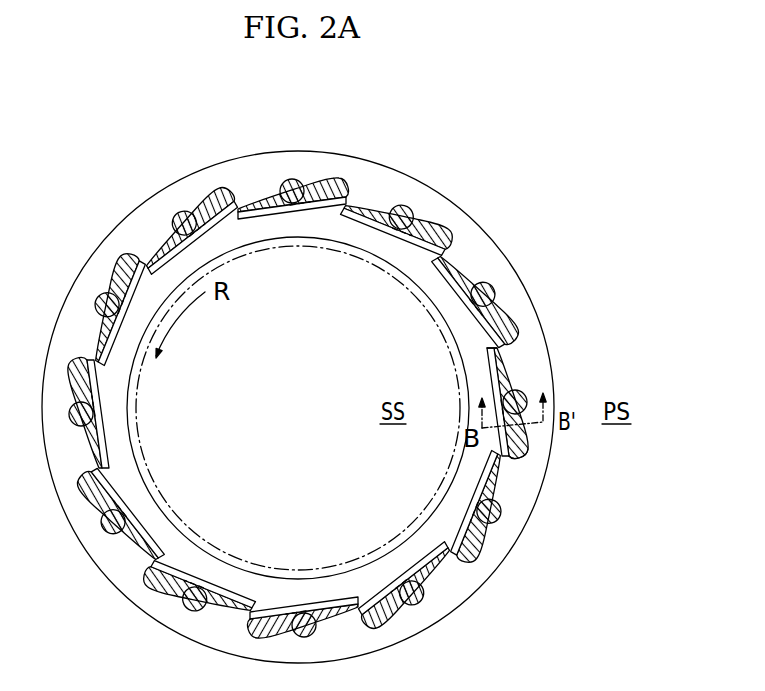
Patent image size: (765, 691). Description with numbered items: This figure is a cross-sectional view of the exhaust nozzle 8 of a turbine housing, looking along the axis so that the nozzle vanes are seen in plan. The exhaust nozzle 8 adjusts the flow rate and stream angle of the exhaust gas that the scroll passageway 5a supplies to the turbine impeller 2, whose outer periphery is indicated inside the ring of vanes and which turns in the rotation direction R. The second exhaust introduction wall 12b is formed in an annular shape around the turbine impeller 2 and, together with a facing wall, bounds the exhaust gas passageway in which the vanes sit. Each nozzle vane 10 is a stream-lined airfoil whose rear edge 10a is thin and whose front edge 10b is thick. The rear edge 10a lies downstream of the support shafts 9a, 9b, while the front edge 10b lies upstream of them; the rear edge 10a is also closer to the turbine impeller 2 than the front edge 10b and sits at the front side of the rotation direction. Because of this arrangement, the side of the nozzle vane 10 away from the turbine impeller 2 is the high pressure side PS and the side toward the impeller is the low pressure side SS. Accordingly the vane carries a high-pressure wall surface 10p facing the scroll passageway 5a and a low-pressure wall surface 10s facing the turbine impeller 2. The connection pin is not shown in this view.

The exhaust nozzle 8 is at (607, 175).
The turbine impeller 2 is at (355, 248).
The second exhaust introduction wall 12b is at (473, 246).
The scroll passageway 5a is at (563, 273).
The nozzle vane 10 is at (516, 371).
The support shaft 9a is at (527, 393).
The support shaft 9b is at (515, 402).
The rear edge 10a is at (492, 347).
The front edge 10b is at (518, 458).
The low-pressure wall surface 10s is at (480, 483).
The high-pressure wall surface 10p is at (493, 540).